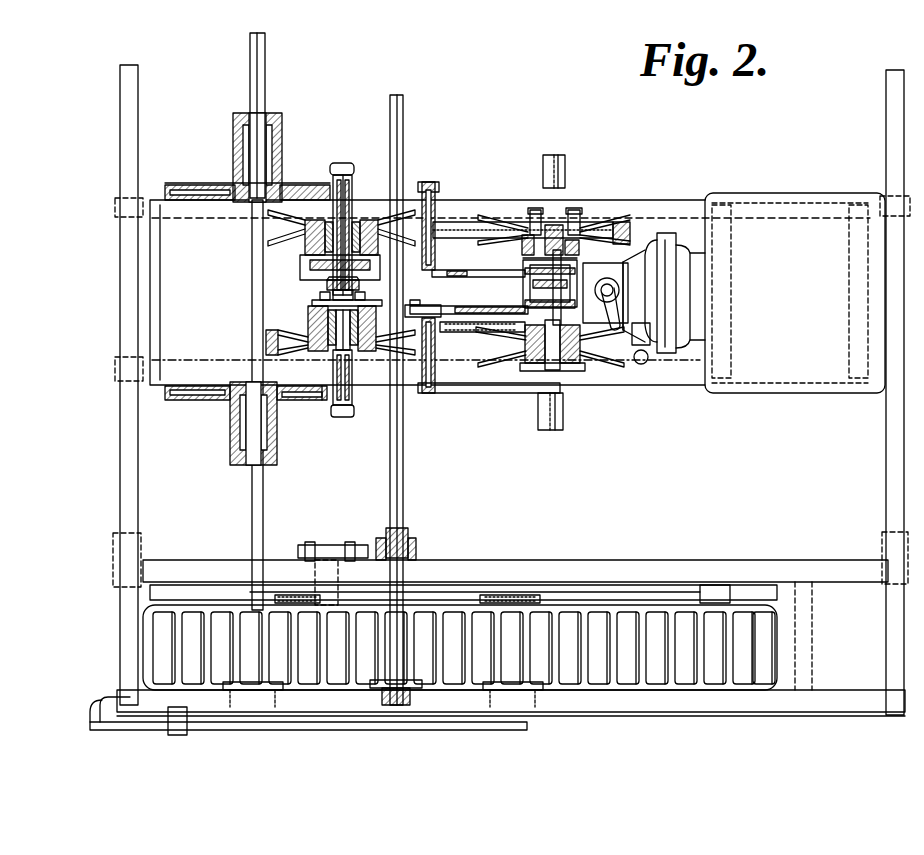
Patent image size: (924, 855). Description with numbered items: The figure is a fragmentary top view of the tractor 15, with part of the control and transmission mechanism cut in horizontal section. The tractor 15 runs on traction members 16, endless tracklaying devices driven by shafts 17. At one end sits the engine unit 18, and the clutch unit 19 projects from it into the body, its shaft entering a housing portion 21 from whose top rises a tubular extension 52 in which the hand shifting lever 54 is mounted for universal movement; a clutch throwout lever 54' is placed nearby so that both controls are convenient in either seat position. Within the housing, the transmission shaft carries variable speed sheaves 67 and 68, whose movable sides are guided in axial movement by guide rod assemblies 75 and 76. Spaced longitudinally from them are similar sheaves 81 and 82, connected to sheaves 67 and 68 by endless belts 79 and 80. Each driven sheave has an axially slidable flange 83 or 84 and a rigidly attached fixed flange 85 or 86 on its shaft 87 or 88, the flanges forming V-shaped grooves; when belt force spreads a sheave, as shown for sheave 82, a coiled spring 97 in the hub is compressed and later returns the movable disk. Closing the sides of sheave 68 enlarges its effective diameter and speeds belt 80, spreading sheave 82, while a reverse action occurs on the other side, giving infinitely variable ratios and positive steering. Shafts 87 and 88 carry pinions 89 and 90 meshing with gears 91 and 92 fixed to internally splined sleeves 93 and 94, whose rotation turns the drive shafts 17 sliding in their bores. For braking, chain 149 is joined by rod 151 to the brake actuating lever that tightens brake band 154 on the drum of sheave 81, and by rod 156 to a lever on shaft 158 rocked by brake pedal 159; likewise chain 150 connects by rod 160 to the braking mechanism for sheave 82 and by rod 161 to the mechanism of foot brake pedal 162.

The tractor 15 is at (636, 717).
The traction members 16 is at (712, 680).
The shafts 17 is at (266, 72).
The engine unit 18 is at (789, 225).
The clutch unit 19 is at (664, 293).
The housing portion 21 is at (605, 293).
The tubular extension 52 is at (607, 278).
The lever 54 is at (602, 309).
The clutch throwout lever 54' is at (647, 368).
The variable speed sheave 67 is at (605, 373).
The variable speed sheave 68 is at (497, 218).
The guide rod assembly 75 is at (560, 367).
The guide rod assembly 76 is at (543, 224).
The endless belt 79 is at (453, 360).
The endless belt 80 is at (452, 221).
The sheave 81 is at (273, 334).
The sheave 82 is at (291, 210).
The flange 83 is at (320, 350).
The flange 84 is at (314, 220).
The flange 85 is at (308, 328).
The flange 86 is at (305, 260).
The shaft 87 is at (354, 385).
The shaft 88 is at (348, 205).
The pinion 89 is at (332, 402).
The pinion 90 is at (336, 175).
The gear 91 is at (304, 400).
The gear 92 is at (310, 216).
The internally splined sleeve 93 is at (230, 420).
The internally splined sleeve 94 is at (235, 155).
The coiled spring 97 is at (370, 280).
The chain 149 is at (480, 314).
The chain 150 is at (508, 276).
The rod 151 is at (435, 310).
The brake band 154 is at (310, 311).
The rod 156 is at (478, 331).
The shaft 158 is at (426, 370).
The brake pedal 159 is at (562, 416).
The rod 160 is at (477, 287).
The rod 161 is at (487, 258).
The foot brake pedal 162 is at (550, 155).